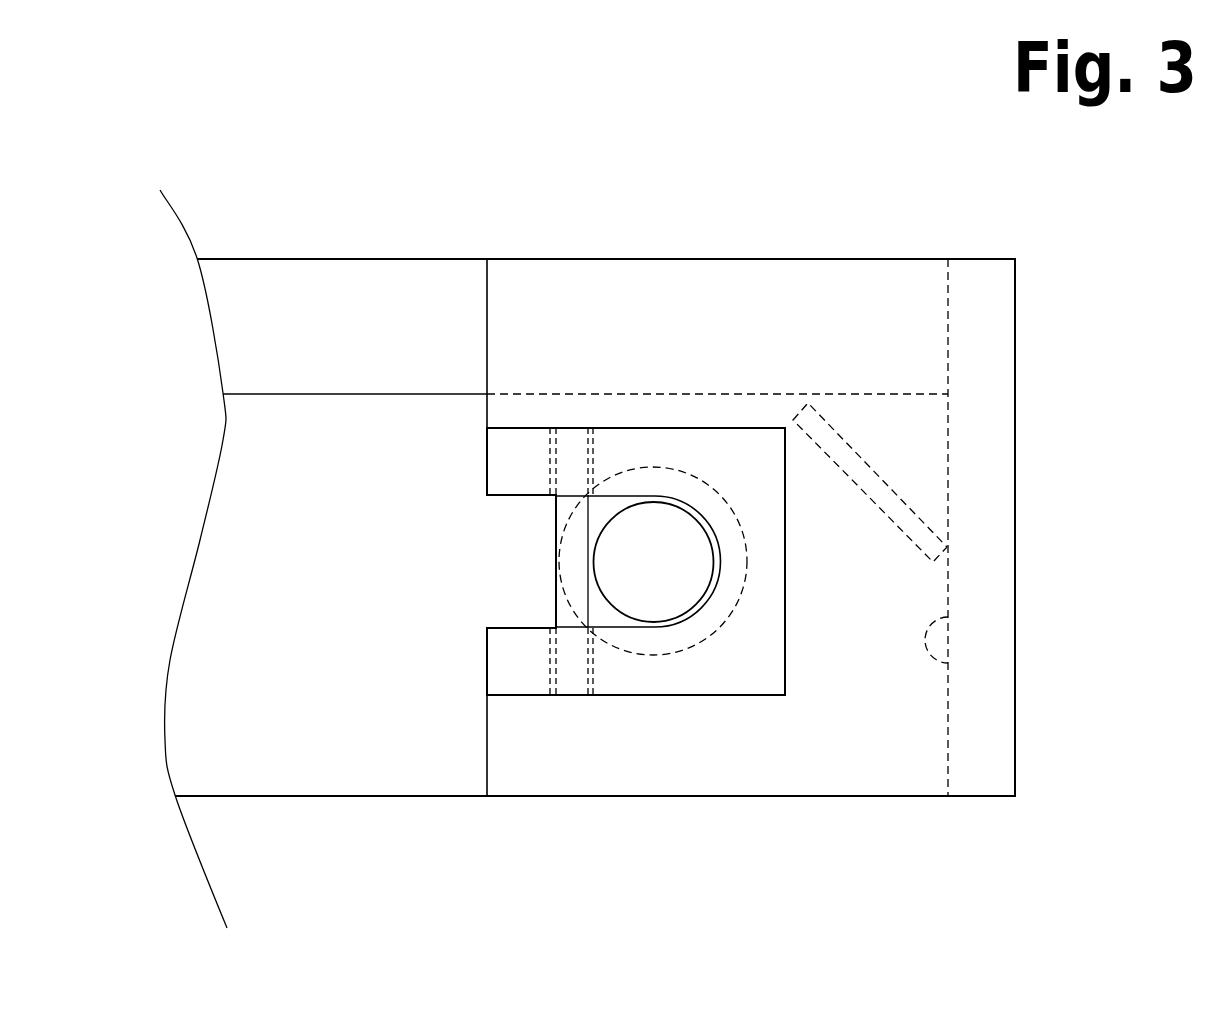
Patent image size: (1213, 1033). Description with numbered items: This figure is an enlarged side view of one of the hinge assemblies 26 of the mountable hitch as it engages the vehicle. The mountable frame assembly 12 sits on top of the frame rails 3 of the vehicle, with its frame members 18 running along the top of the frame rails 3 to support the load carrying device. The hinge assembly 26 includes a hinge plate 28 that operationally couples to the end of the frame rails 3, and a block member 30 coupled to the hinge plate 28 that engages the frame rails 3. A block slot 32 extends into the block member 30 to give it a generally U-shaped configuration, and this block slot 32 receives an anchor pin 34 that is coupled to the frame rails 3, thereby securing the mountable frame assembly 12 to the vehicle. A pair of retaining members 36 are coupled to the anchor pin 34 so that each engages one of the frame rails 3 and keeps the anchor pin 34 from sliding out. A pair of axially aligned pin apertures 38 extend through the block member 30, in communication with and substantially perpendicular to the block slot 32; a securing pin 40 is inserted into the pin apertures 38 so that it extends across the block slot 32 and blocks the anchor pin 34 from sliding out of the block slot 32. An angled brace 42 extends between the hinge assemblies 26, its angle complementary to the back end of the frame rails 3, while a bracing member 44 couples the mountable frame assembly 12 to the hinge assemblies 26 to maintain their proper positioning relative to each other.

The frame rails 3 is at (260, 720).
The mountable frame assembly 12 is at (478, 244).
The frame members 18 is at (260, 300).
The hinge assemblies 26 is at (1027, 525).
The hinge plate 28 is at (870, 725).
The block member 30 is at (747, 662).
The block slot 32 is at (530, 562).
The anchor pin 34 is at (657, 545).
The retaining members 36 is at (710, 480).
The pin apertures 38 is at (590, 460).
The securing pin 40 is at (553, 530).
The angled brace 42 is at (883, 475).
The bracing member 44 is at (935, 657).